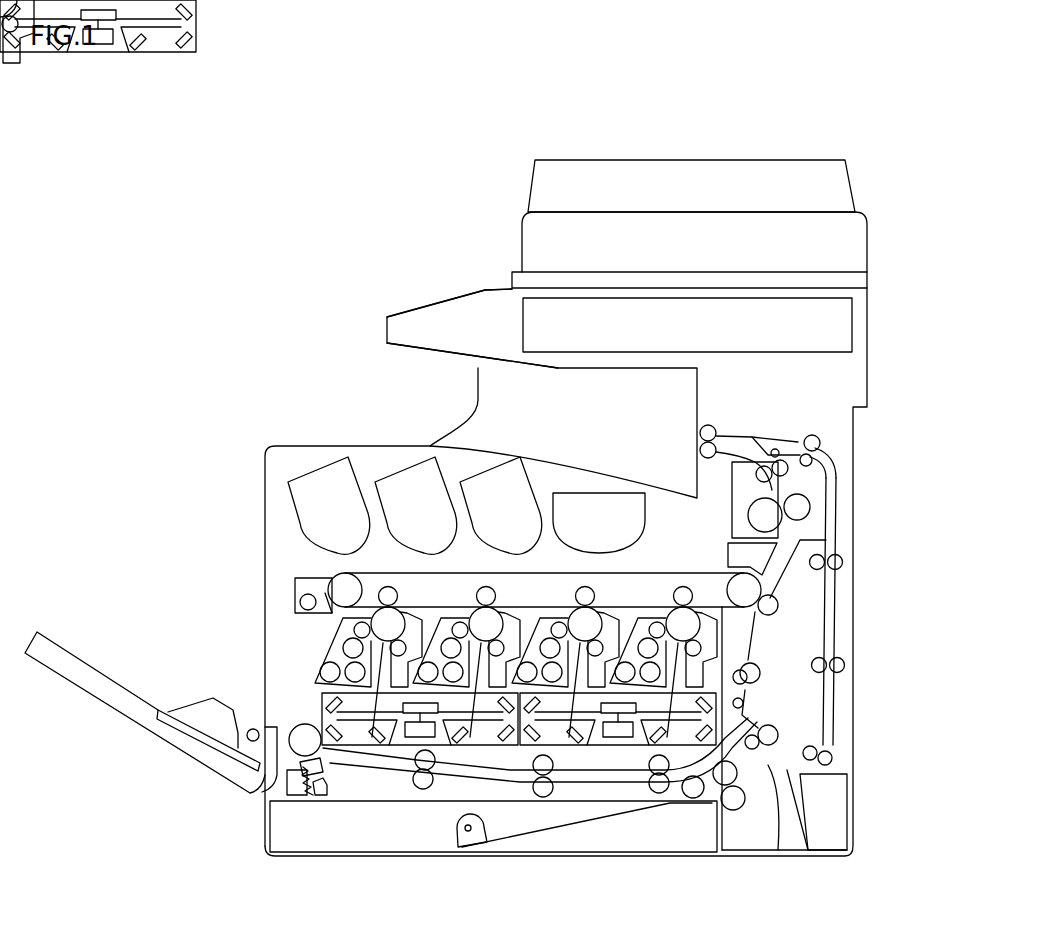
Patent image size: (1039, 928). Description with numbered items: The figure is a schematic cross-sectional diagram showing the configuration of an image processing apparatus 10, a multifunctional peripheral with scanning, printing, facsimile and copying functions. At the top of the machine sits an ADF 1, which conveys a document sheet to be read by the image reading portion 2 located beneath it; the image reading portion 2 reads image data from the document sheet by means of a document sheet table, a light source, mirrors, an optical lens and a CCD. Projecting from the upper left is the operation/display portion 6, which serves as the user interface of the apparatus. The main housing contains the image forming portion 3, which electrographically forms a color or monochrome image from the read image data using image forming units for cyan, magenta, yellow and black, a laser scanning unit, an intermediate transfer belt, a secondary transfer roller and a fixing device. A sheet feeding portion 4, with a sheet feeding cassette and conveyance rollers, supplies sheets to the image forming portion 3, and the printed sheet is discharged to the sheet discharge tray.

The image processing apparatus 10 is at (256, 200).
The ADF 1 is at (863, 209).
The image reading portion 2 is at (864, 331).
The image forming portion 3 is at (282, 462).
The sheet feeding portion 4 is at (800, 703).
The operation/display portion 6 is at (427, 291).